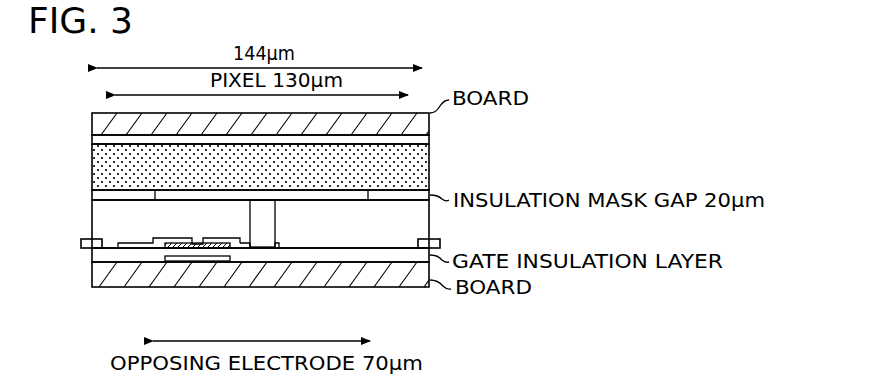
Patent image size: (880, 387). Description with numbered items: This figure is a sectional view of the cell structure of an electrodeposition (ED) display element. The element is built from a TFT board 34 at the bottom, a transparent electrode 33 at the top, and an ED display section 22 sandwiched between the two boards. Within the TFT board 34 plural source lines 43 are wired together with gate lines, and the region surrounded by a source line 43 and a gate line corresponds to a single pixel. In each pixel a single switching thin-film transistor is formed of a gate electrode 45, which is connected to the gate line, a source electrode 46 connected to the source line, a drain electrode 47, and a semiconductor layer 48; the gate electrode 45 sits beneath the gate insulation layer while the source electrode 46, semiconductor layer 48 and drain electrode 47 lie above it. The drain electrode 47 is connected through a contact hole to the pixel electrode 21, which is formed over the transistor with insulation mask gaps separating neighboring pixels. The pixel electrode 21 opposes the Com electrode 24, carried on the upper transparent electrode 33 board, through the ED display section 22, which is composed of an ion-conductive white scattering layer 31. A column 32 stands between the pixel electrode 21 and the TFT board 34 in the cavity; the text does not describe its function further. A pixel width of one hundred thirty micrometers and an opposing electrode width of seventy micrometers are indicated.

The transparent electrode 33 is at (70, 112).
The ED display section 22 is at (256, 167).
The TFT board 34 is at (262, 260).
The Com electrode 24 is at (430, 140).
The ion-conductive white scattering layer 31 is at (430, 158).
The pixel electrode 21 is at (350, 200).
The column spacer 32 is at (276, 226).
The source line 43 is at (278, 272).
The source electrode 46 is at (152, 247).
The gate electrode 45 is at (182, 261).
The semiconductor layer 48 is at (217, 248).
The drain electrode 47 is at (263, 248).